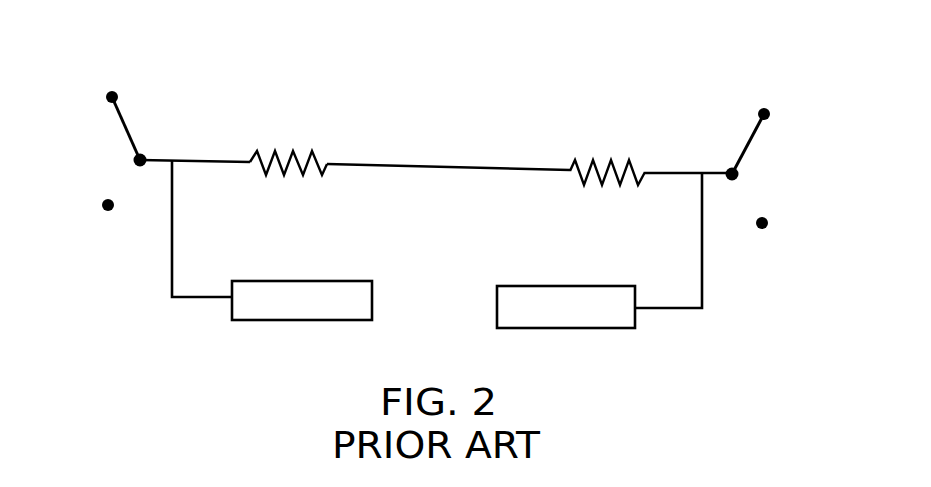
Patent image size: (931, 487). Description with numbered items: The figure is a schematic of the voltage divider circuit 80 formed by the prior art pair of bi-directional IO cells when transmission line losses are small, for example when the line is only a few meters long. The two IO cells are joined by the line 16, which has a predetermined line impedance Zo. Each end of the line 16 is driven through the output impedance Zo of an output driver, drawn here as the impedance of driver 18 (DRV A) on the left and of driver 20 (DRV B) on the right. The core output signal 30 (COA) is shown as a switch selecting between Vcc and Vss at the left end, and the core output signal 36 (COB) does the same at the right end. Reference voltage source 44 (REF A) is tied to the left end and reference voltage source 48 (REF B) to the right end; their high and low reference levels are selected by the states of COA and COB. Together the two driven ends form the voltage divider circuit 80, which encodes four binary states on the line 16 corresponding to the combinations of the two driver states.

The line 16 is at (498, 167).
The output driver 18 is at (263, 98).
The output driver 20 is at (633, 108).
The core output signal 30 is at (80, 142).
The core output signal 36 is at (803, 158).
The reference voltage source 44 is at (262, 280).
The reference voltage source 48 is at (552, 285).
The voltage divider circuit 80 is at (356, 336).